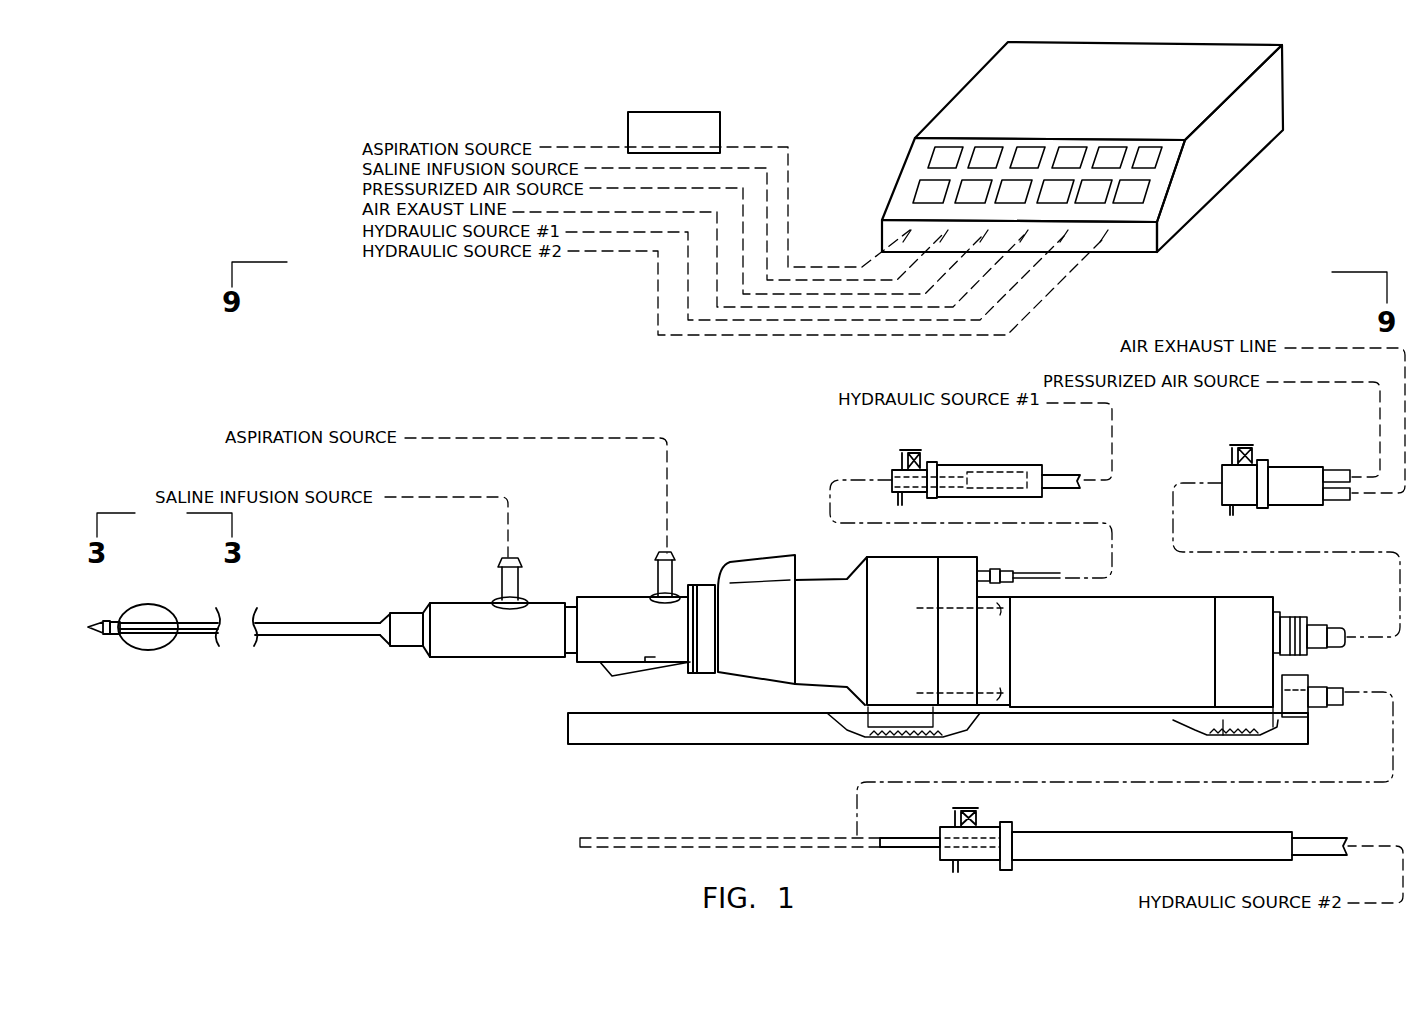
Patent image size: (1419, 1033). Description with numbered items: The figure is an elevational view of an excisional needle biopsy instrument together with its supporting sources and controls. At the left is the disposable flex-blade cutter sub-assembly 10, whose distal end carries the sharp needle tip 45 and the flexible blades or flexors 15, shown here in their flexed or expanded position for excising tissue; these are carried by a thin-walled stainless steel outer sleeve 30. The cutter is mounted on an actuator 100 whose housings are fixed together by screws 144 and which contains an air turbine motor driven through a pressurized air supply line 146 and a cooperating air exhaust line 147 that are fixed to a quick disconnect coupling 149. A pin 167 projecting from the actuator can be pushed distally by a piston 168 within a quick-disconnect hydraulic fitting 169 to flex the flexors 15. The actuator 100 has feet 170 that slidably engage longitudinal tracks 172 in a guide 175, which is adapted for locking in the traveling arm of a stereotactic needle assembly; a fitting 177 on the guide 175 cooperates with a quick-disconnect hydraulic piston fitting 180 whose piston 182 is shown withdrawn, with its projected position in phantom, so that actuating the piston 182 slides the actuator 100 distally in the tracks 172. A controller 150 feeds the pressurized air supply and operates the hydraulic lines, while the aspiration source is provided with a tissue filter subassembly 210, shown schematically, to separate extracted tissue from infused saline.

The flex-blade cutter sub-assembly 10 is at (624, 561).
The flexors 15 is at (143, 649).
The outer sleeve 30 is at (337, 621).
The sharp needle tip 45 is at (93, 627).
The actuator 100 is at (801, 498).
The screws 144 is at (990, 690).
The pressurized air supply line 146 is at (1348, 470).
The air exhaust line 147 is at (1347, 502).
The quick disconnect coupling 149 is at (1222, 480).
The controller 150 is at (920, 97).
The pin 167 is at (1027, 575).
The piston 168 is at (1013, 462).
The quick-disconnect hydraulic fitting 169 is at (892, 468).
The feet 170 is at (1223, 737).
The longitudinal tracks 172 is at (1208, 733).
The guide 175 is at (568, 727).
The fitting 177 is at (1318, 707).
The quick-disconnect hydraulic piston fitting 180 is at (1155, 832).
The piston 182 is at (923, 847).
The tissue filter subassembly 210 is at (645, 102).